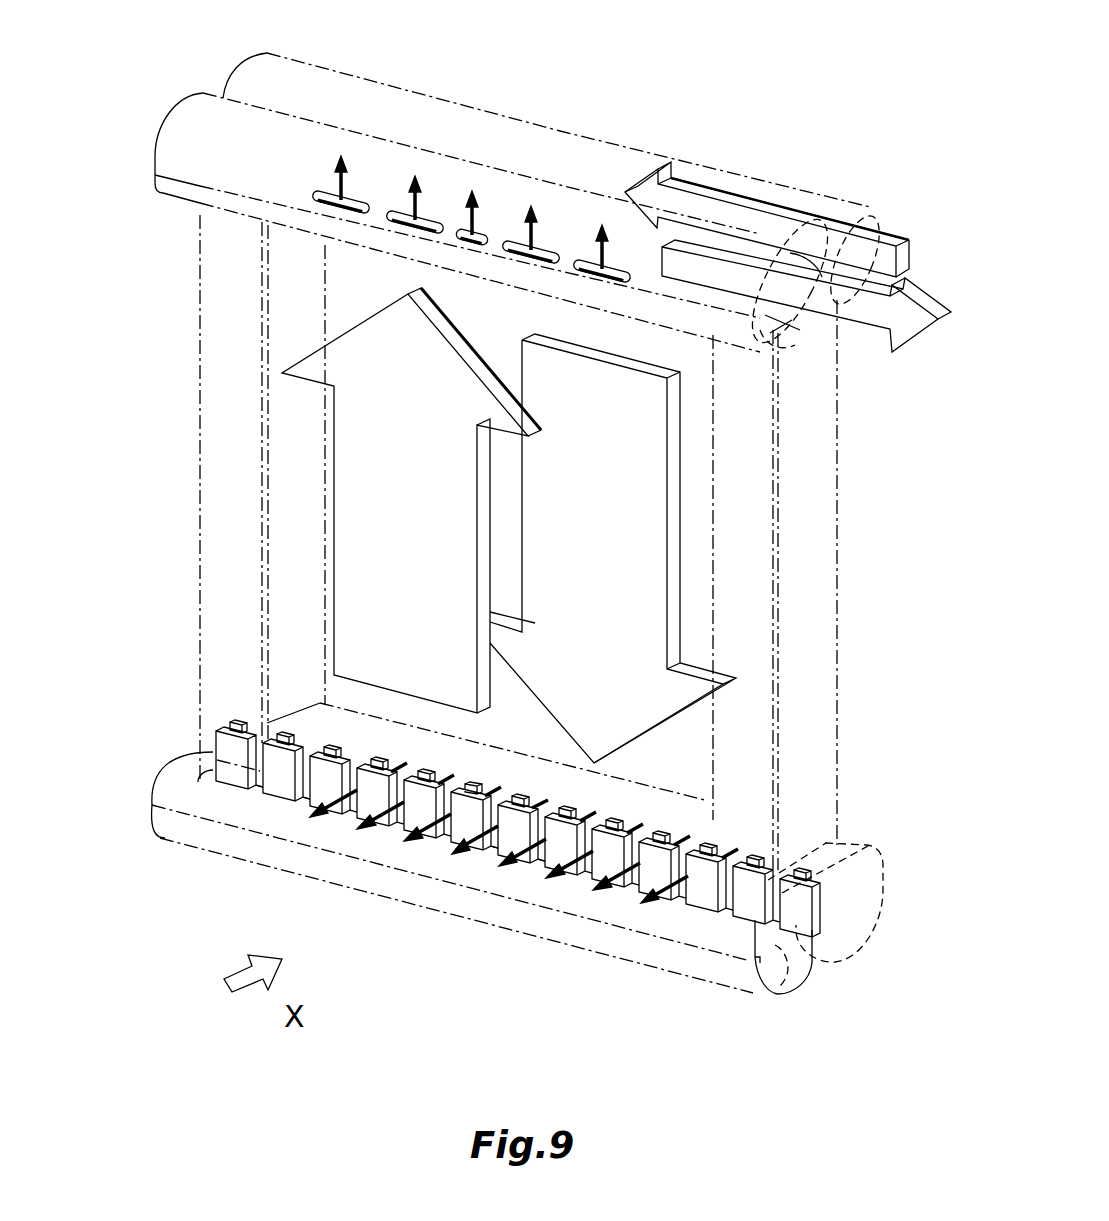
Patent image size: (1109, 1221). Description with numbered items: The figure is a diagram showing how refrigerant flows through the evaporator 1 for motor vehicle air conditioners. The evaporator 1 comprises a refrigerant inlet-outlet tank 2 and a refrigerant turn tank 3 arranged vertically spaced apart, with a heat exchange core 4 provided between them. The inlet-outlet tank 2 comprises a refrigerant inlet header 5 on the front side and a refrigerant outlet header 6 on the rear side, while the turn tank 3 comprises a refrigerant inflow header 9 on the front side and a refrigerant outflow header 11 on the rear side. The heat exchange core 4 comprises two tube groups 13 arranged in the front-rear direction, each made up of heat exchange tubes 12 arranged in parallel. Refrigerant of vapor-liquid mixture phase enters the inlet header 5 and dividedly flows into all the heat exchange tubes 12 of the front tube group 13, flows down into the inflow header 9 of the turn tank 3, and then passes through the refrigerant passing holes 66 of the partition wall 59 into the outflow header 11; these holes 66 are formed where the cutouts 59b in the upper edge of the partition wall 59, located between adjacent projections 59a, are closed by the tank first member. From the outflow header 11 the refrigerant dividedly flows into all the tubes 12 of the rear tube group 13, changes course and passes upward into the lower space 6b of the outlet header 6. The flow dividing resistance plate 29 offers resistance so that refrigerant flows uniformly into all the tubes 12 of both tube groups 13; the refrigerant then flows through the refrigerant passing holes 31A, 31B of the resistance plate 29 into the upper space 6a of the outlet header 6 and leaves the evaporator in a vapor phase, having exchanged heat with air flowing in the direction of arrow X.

The evaporator 1 is at (816, 95).
The refrigerant inlet-outlet tank 2 is at (687, 123).
The refrigerant turn tank 3 is at (555, 1002).
The heat exchange core 4 is at (200, 527).
The refrigerant inlet header 5 is at (878, 226).
The refrigerant outlet header 6 is at (770, 258).
The upper space 6a is at (800, 238).
The lower space 6b is at (796, 335).
The refrigerant inflow header 9 is at (870, 890).
The refrigerant outflow header 11 is at (775, 995).
The heat exchange tube 12 is at (836, 748).
The tube group 13 is at (745, 478).
The flow dividing resistance plate 29 is at (798, 338).
The refrigerant passing through hole 31A is at (478, 226).
The refrigerant passing through hole 31B is at (582, 262).
The partition wall 59 is at (216, 752).
The projection 59a is at (522, 795).
The refrigerant passing cutout 59b is at (300, 800).
The refrigerant passing hole 66 is at (492, 852).